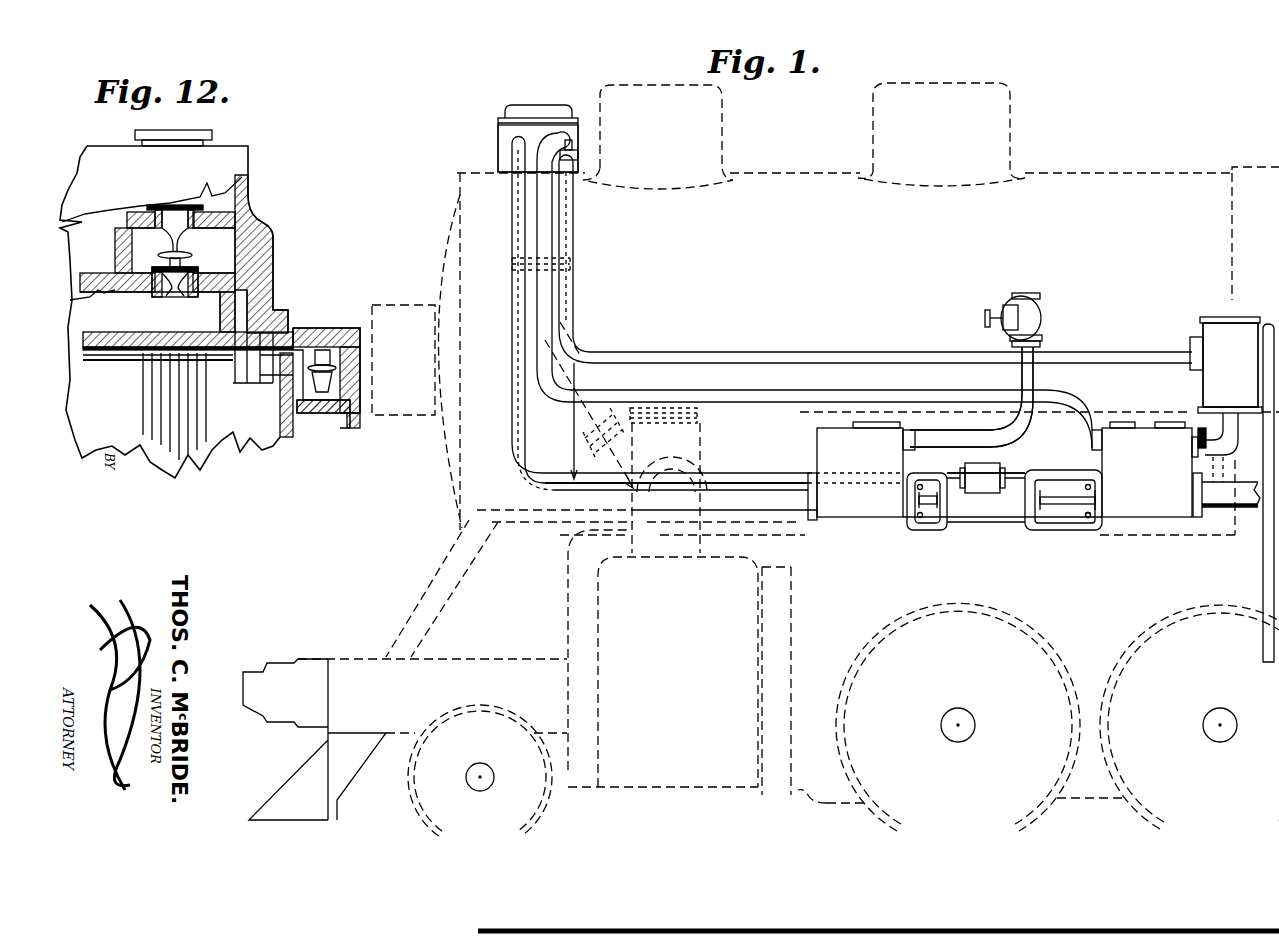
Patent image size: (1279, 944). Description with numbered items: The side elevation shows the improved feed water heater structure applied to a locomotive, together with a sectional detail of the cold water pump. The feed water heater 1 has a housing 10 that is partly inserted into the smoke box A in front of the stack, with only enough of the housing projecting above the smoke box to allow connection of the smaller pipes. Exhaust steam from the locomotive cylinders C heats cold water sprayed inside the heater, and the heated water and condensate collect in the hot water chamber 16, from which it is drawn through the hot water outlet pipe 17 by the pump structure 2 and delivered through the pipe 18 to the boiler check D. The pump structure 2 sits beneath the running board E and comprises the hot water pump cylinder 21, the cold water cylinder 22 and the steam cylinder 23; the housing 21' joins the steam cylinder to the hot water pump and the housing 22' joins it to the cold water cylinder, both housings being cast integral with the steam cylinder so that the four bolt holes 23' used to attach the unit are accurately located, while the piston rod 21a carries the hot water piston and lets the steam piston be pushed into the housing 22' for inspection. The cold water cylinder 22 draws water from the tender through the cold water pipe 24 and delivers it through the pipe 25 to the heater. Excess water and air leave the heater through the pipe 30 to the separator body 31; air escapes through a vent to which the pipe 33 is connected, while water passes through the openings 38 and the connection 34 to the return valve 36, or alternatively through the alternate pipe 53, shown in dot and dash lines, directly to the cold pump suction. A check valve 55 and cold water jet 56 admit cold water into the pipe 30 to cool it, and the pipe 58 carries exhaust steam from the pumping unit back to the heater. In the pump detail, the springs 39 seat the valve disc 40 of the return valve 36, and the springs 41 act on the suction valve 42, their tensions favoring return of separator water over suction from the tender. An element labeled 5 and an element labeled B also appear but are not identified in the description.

In FIG. 1, the feed water heater 1 is at (490, 136).
In FIG. 1, the housing 10 is at (498, 150).
In FIG. 1, the check valve 55 is at (572, 146).
In FIG. 1, the cold water jet 56 is at (578, 155).
In FIG. 1, the pipe 58 is at (515, 325).
In FIG. 1, the hot water outlet pipe 17 is at (548, 437).
In FIG. 1, the pipe 25 is at (552, 150).
In FIG. 1, the pipe 30 is at (567, 218).
In FIG. 1, the pipe 18 is at (1034, 372).
In FIG. 1, the hot water chamber 16 is at (1013, 447).
In FIG. 1, the tank 5 is at (1194, 337).
In FIG. 1, the body of the separator 31 is at (1222, 332).
In FIG. 1, the connection 34 is at (1228, 436).
In FIG. 12, the return valve 36 is at (320, 415).
In FIG. 1, the return valve 36 is at (1198, 440).
In FIG. 1, the alternate pipe 53 is at (1225, 460).
In FIG. 1, the cold water pipe 24 is at (1222, 495).
In FIG. 1, the pipe 33 is at (1263, 572).
In FIG. 1, the hot water pump cylinder 21 is at (861, 494).
In FIG. 1, the housing 21' is at (926, 523).
In FIG. 1, the openings 38 is at (955, 475).
In FIG. 1, the steam cylinder 23 is at (983, 523).
In FIG. 1, the pump structure 2 is at (1005, 512).
In FIG. 1, the housing 22' is at (1063, 523).
In FIG. 1, the piston rod 21a is at (1062, 505).
In FIG. 1, the bolt holes 23' is at (1102, 548).
In FIG. 1, the cold water cylinder 22 is at (1145, 494).
In FIG. 12, the springs 41 is at (195, 262).
In FIG. 12, the suction valve 42 is at (160, 300).
In FIG. 12, the springs 39 is at (340, 330).
In FIG. 12, the valve disc 40 is at (308, 340).
In FIG. 1, the smoke box A is at (457, 212).
In FIG. 1, the cab dome B is at (705, 120).
In FIG. 1, the cylinders C is at (752, 613).
In FIG. 1, the boiler check D is at (1043, 310).
In FIG. 1, the running board E is at (1098, 412).